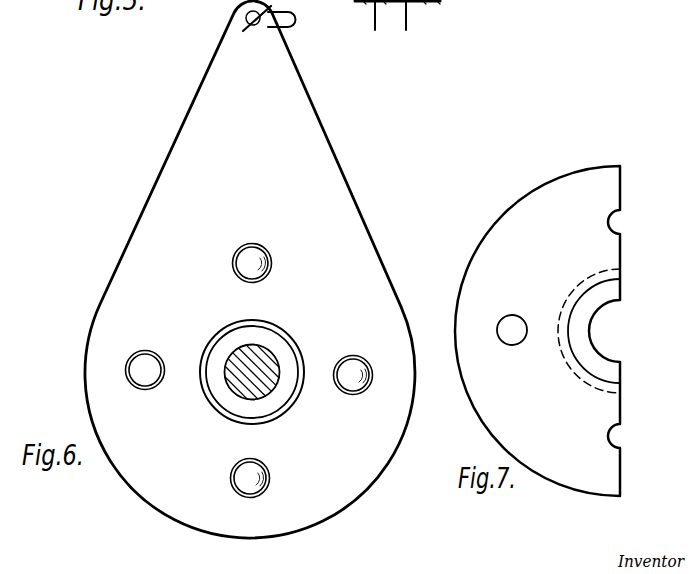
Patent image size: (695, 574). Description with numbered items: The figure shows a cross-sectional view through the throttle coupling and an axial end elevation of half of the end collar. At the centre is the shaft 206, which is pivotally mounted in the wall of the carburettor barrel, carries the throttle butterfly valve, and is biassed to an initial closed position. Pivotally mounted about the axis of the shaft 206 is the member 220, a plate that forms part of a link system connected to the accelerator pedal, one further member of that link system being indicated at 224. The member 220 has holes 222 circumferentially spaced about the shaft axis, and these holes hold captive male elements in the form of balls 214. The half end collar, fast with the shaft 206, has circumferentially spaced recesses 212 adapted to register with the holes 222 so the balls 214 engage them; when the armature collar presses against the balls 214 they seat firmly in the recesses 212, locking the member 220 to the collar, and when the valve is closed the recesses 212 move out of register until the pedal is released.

In FIG. 6, the shaft 206 is at (253, 347).
In FIG. 7, the recesses 212 is at (596, 229).
In FIG. 6, the balls 214 is at (242, 258).
In FIG. 6, the member 220 is at (300, 112).
In FIG. 6, the holes 222 is at (270, 246).
In FIG. 6, the member of the link system 224 is at (277, 21).